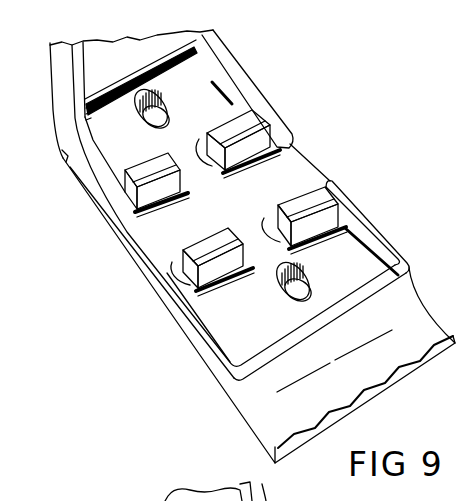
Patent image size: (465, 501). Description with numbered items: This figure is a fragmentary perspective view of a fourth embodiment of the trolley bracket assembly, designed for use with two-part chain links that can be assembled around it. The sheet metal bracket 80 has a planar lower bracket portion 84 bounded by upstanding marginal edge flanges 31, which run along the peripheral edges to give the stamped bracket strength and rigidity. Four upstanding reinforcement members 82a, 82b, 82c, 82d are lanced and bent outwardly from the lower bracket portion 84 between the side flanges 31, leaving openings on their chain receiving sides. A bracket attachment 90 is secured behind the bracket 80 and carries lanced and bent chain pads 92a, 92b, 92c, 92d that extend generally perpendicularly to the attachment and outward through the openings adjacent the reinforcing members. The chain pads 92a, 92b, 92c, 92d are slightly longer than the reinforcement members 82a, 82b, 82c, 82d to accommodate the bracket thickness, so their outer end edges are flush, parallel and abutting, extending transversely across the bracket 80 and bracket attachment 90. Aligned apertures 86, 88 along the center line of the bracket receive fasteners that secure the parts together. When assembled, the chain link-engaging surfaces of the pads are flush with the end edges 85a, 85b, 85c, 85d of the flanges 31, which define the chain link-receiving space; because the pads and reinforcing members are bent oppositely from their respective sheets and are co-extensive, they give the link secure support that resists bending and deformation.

The bracket 80 is at (131, 36).
The marginal edge flange 31 is at (246, 85).
The planar lower bracket portion 84 is at (120, 124).
The aperture 86 is at (160, 99).
The aperture 88 is at (309, 281).
The reinforcement member 82a is at (230, 131).
The reinforcement member 82b is at (148, 165).
The reinforcement member 82c is at (224, 280).
The reinforcement member 82d is at (315, 232).
The chain pad 92a is at (239, 154).
The chain pad 92b is at (155, 192).
The chain pad 92c is at (200, 253).
The chain pad 92d is at (303, 195).
The end edge 85a is at (291, 138).
The end edge 85b is at (128, 231).
The end edge 85c is at (167, 273).
The end edge 85d is at (331, 179).
The bracket attachment 90 is at (410, 315).